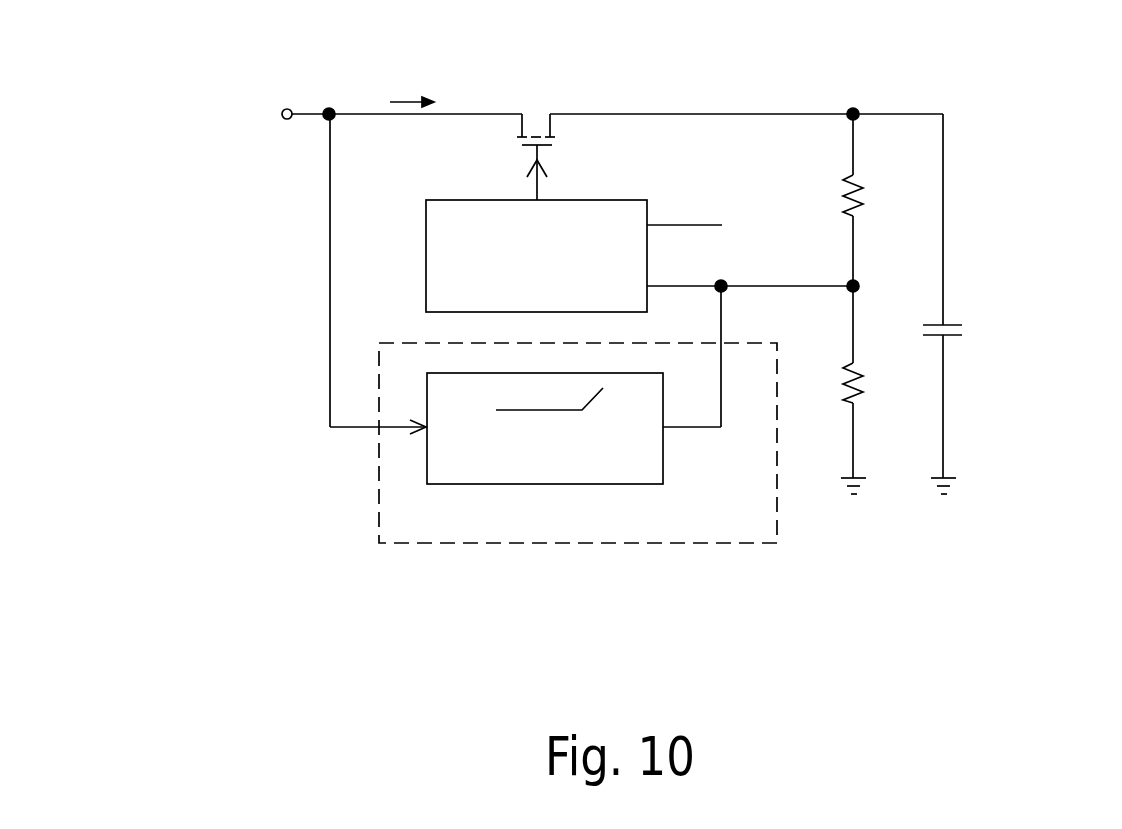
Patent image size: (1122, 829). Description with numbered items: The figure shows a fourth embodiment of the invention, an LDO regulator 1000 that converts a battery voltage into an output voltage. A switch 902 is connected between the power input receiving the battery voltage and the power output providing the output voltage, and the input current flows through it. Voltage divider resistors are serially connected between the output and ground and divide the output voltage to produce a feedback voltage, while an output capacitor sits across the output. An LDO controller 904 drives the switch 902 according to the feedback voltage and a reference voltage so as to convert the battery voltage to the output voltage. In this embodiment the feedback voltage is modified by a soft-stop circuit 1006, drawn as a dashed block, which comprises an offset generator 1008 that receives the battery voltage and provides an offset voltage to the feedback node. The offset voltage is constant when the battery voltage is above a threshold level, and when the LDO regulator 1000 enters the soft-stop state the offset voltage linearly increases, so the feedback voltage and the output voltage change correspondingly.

The LDO regulator 1000 is at (1016, 98).
The switch 902 is at (528, 99).
The LDO controller 904 is at (615, 200).
The soft-stop circuit 1006 is at (379, 500).
The offset generator 1008 is at (545, 484).